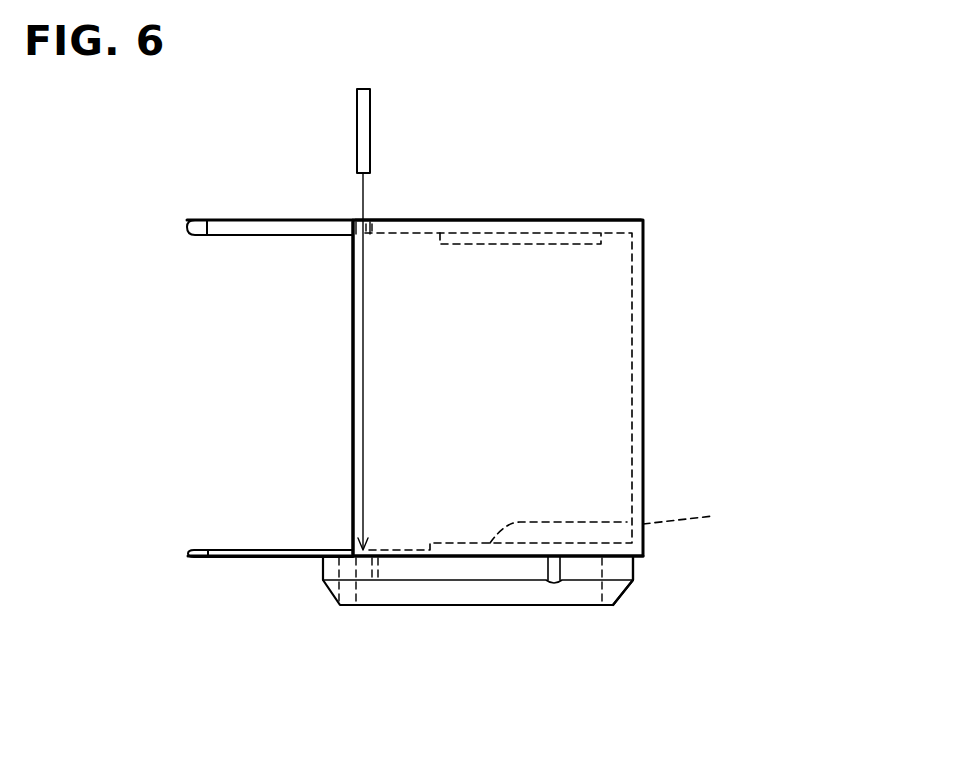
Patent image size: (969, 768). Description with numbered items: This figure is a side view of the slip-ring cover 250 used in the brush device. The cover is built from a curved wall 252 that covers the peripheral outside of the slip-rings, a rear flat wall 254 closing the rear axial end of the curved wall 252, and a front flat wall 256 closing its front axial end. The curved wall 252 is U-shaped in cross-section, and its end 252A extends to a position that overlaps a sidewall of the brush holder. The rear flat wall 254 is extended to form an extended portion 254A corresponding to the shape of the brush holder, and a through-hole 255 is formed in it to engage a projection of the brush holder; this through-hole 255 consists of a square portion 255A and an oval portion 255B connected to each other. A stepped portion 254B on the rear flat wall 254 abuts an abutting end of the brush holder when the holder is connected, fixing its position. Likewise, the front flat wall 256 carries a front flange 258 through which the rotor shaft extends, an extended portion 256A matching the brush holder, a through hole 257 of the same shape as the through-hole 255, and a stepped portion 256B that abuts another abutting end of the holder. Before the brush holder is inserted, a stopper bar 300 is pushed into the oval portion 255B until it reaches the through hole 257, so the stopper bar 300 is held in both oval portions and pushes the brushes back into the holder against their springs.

The slip-ring cover 250 is at (613, 198).
The curved wall 252 is at (600, 392).
The end of the curved wall 252A is at (353, 388).
The rear flat wall 254 is at (438, 219).
The extended portion 254A is at (262, 220).
The stepped portion 254B is at (497, 245).
The through-hole 255 is at (352, 237).
The square portion 255A is at (355, 216).
The oval portion 255B is at (368, 216).
The front flat wall 256 is at (450, 558).
The extended portion 256A is at (257, 558).
The stepped portion 256B is at (650, 522).
The through hole 257 is at (346, 605).
The front flange 258 is at (635, 568).
The stopper bar 300 is at (368, 105).